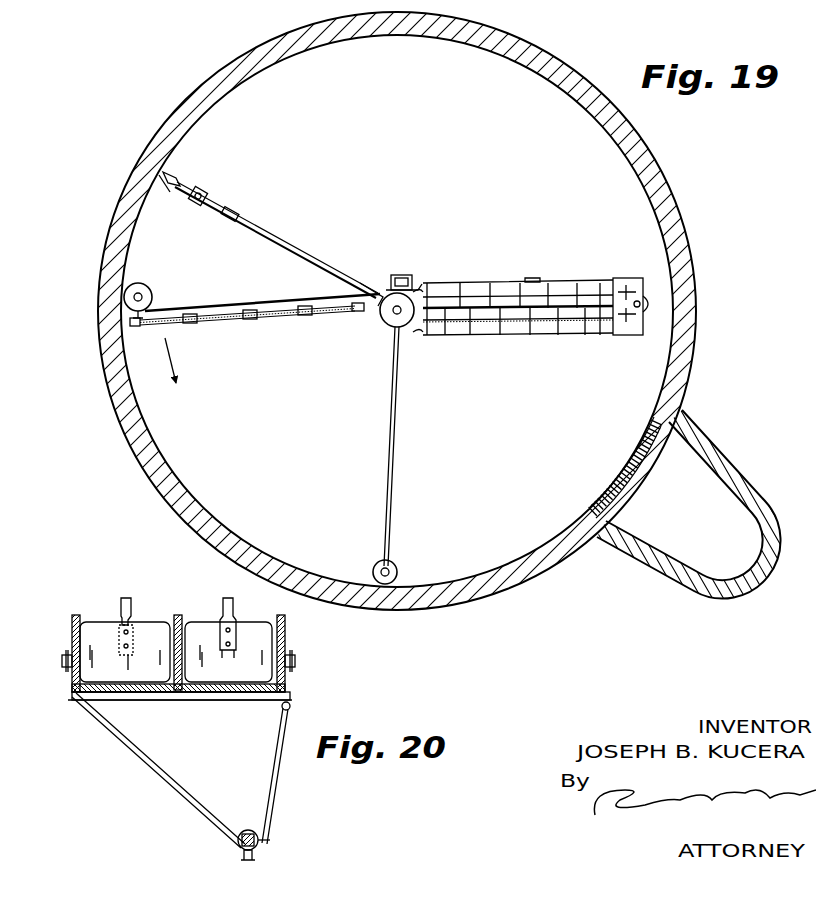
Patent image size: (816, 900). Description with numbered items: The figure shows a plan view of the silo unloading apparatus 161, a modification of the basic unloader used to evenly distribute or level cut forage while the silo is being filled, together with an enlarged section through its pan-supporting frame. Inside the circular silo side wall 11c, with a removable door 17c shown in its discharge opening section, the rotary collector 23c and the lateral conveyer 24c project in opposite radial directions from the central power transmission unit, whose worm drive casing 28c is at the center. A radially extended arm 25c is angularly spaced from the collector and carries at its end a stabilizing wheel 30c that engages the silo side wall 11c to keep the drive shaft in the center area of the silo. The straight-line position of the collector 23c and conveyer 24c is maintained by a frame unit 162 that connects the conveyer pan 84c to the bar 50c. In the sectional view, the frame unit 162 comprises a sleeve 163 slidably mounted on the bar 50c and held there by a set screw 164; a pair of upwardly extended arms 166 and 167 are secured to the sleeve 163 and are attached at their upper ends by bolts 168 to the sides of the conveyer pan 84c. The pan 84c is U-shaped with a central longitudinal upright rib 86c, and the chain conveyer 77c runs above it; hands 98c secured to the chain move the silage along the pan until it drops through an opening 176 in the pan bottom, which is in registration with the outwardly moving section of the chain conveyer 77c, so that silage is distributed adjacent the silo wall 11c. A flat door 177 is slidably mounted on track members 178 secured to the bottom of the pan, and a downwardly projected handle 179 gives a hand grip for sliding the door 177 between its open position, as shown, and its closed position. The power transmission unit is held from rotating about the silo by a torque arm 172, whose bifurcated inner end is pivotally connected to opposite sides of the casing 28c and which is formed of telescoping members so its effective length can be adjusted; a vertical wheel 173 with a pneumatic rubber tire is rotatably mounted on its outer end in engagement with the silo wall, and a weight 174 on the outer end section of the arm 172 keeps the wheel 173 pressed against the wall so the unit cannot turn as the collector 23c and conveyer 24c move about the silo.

In FIG. 19, the silo side wall 11c is at (648, 152).
In FIG. 19, the removable door 17c is at (600, 498).
In FIG. 19, the rotary collector 23c is at (294, 322).
In FIG. 19, the lateral conveyer 24c is at (543, 268).
In FIG. 20, the lateral conveyer 24c is at (300, 646).
In FIG. 19, the radially extended arm 25c is at (392, 430).
In FIG. 19, the worm drive casing 28c is at (385, 322).
In FIG. 19, the stabilizing wheel 30c is at (391, 565).
In FIG. 20, the bar 50c is at (244, 830).
In FIG. 20, the chain conveyer 77c is at (127, 598).
In FIG. 19, the conveyer pan 84c is at (551, 340).
In FIG. 20, the conveyer pan 84c is at (77, 614).
In FIG. 20, the central longitudinal upright rib 86c is at (178, 612).
In FIG. 20, the hands 98c is at (148, 622).
In FIG. 19, the silo unloading apparatus 161 is at (397, 270).
In FIG. 19, the frame unit 162 is at (528, 338).
In FIG. 20, the frame unit 162 is at (283, 788).
In FIG. 20, the sleeve 163 is at (258, 845).
In FIG. 20, the set screw 164 is at (242, 860).
In FIG. 20, the upwardly extended arm 166 is at (272, 762).
In FIG. 20, the upwardly extended arm 167 is at (92, 737).
In FIG. 20, the bolts 168 is at (63, 655).
In FIG. 19, the torque arm 172 is at (287, 230).
In FIG. 19, the vertical wheel 173 is at (172, 176).
In FIG. 19, the weight 174 is at (205, 194).
In FIG. 19, the opening 176 is at (582, 340).
In FIG. 20, the opening 176 is at (150, 690).
In FIG. 20, the flat door 177 is at (252, 694).
In FIG. 20, the track members 178 is at (203, 696).
In FIG. 20, the handle 179 is at (291, 706).